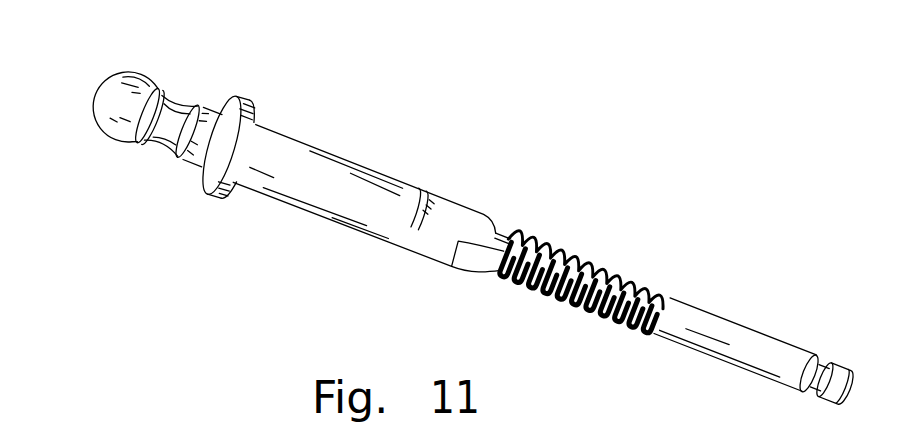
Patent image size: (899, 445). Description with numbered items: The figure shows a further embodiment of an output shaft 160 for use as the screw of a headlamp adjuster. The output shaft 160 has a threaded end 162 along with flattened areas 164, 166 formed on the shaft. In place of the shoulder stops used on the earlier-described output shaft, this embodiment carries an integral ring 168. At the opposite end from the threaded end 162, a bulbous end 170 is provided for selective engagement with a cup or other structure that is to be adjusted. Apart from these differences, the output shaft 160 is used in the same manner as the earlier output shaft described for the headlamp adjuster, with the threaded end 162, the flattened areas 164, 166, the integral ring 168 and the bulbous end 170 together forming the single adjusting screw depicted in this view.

The output shaft 160 is at (424, 139).
The threaded end 162 is at (558, 303).
The flattened area 164 is at (626, 270).
The flattened area 166 is at (645, 333).
The integral ring 168 is at (246, 104).
The bulbous end 170 is at (118, 91).